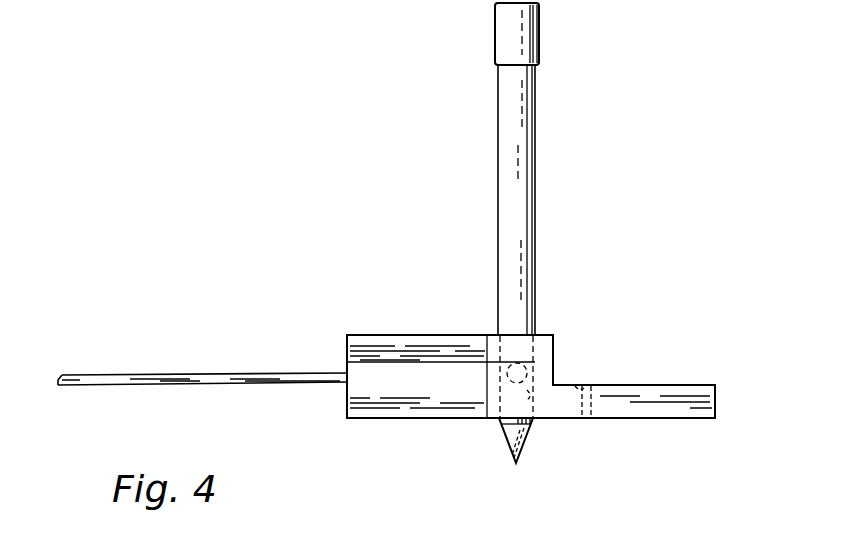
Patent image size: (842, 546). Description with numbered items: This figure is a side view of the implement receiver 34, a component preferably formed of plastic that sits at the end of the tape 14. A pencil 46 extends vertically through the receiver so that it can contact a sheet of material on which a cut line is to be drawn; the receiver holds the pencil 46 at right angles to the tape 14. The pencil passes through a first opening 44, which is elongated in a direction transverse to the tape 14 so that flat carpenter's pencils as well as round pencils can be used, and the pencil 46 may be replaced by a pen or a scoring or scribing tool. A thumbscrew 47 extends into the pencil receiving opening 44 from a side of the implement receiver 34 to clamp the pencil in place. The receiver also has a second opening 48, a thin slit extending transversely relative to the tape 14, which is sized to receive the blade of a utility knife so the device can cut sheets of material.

The implement receiver 34 is at (375, 288).
The pencil 46 is at (535, 108).
The tape 14 is at (232, 373).
The thumbscrew 47 is at (537, 352).
The second opening 48 is at (575, 383).
The first opening 44 is at (527, 400).